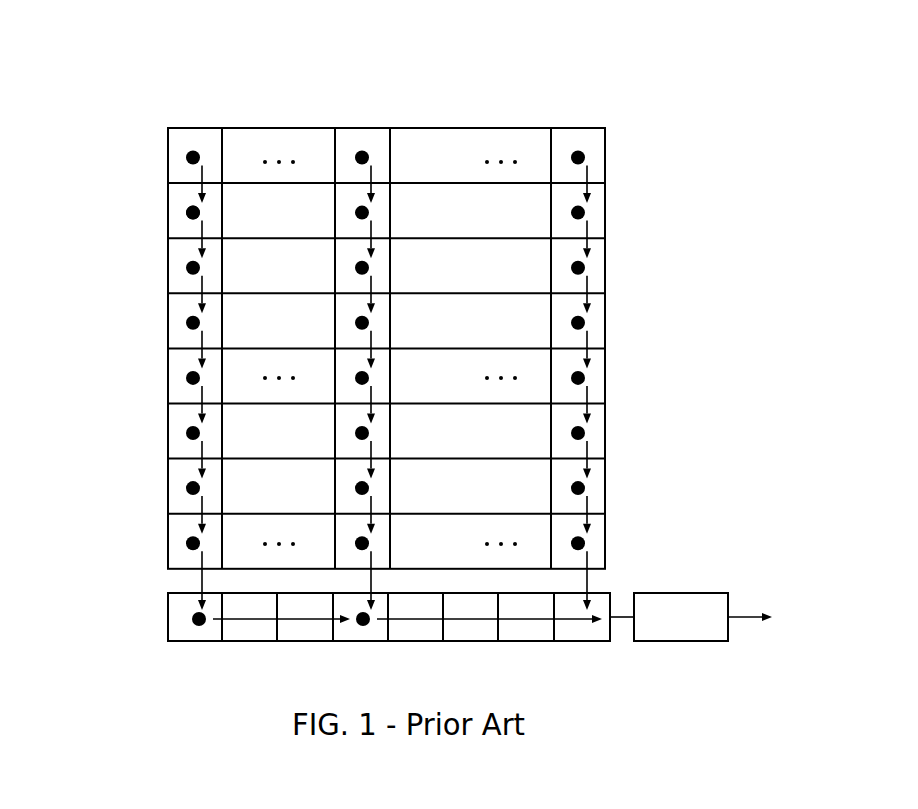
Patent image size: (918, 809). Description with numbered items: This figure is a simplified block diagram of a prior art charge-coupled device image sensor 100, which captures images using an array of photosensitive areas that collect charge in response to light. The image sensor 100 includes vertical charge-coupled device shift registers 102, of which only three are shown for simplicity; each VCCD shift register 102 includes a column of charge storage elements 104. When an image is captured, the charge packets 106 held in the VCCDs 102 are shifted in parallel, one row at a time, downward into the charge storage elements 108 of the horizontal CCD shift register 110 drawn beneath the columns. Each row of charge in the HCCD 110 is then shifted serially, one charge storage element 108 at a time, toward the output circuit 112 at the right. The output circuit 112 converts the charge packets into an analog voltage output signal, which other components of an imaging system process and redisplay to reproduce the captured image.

The image sensor 100 is at (94, 79).
The vertical charge-coupled device shift register 102 is at (193, 108).
The charge storage element 104 is at (378, 140).
The charge packet 106 is at (186, 213).
The charge storage element 108 is at (273, 623).
The horizontal CCD shift register 110 is at (152, 612).
The output circuit 112 is at (691, 617).